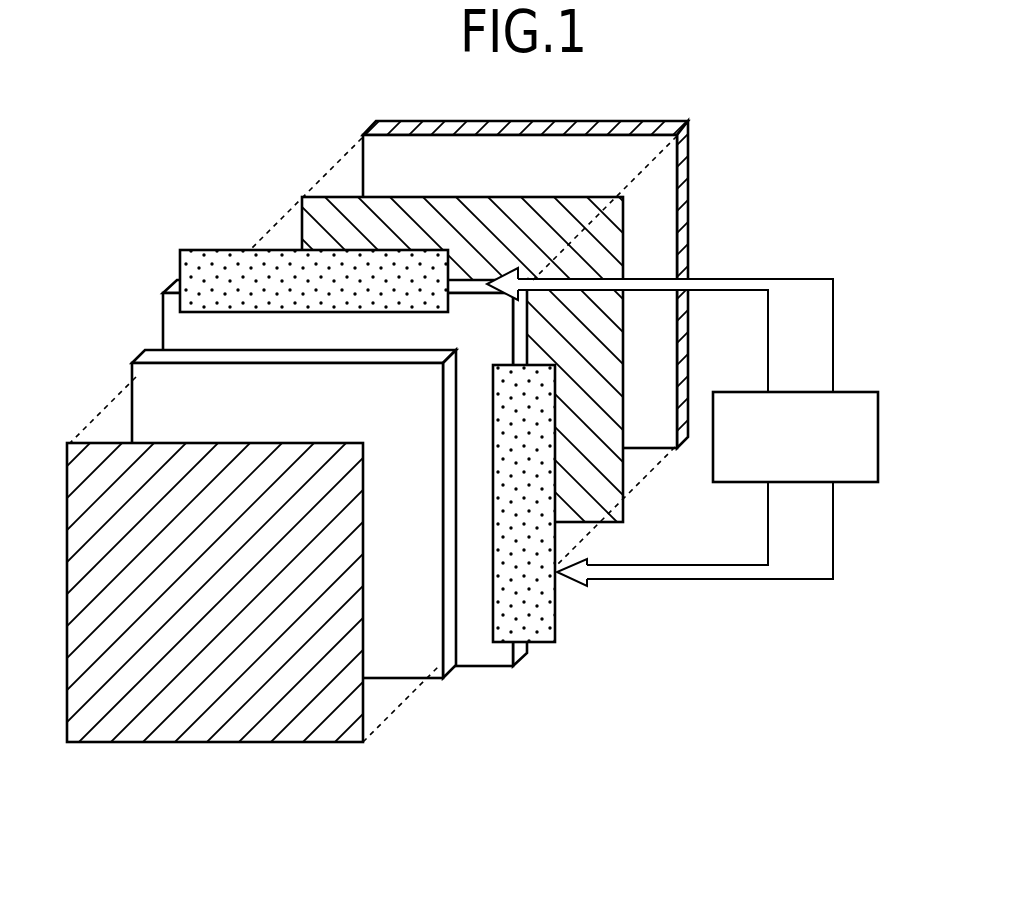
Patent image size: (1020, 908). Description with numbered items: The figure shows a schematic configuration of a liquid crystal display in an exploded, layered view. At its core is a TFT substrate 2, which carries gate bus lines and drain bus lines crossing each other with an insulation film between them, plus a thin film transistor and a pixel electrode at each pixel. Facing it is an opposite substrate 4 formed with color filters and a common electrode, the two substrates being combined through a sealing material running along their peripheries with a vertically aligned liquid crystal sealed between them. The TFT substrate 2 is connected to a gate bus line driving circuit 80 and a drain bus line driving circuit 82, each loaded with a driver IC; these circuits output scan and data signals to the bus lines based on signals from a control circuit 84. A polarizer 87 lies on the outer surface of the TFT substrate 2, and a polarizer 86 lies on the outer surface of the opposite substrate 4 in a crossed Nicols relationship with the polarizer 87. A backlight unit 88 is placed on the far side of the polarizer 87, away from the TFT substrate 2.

The TFT substrate 2 is at (475, 670).
The opposite substrate 4 is at (433, 678).
The gate bus line driving circuit 80 is at (543, 620).
The drain bus line driving circuit 82 is at (212, 267).
The control circuit 84 is at (873, 390).
The polarizer 86 is at (225, 732).
The polarizer 87 is at (607, 497).
The backlight unit 88 is at (690, 173).